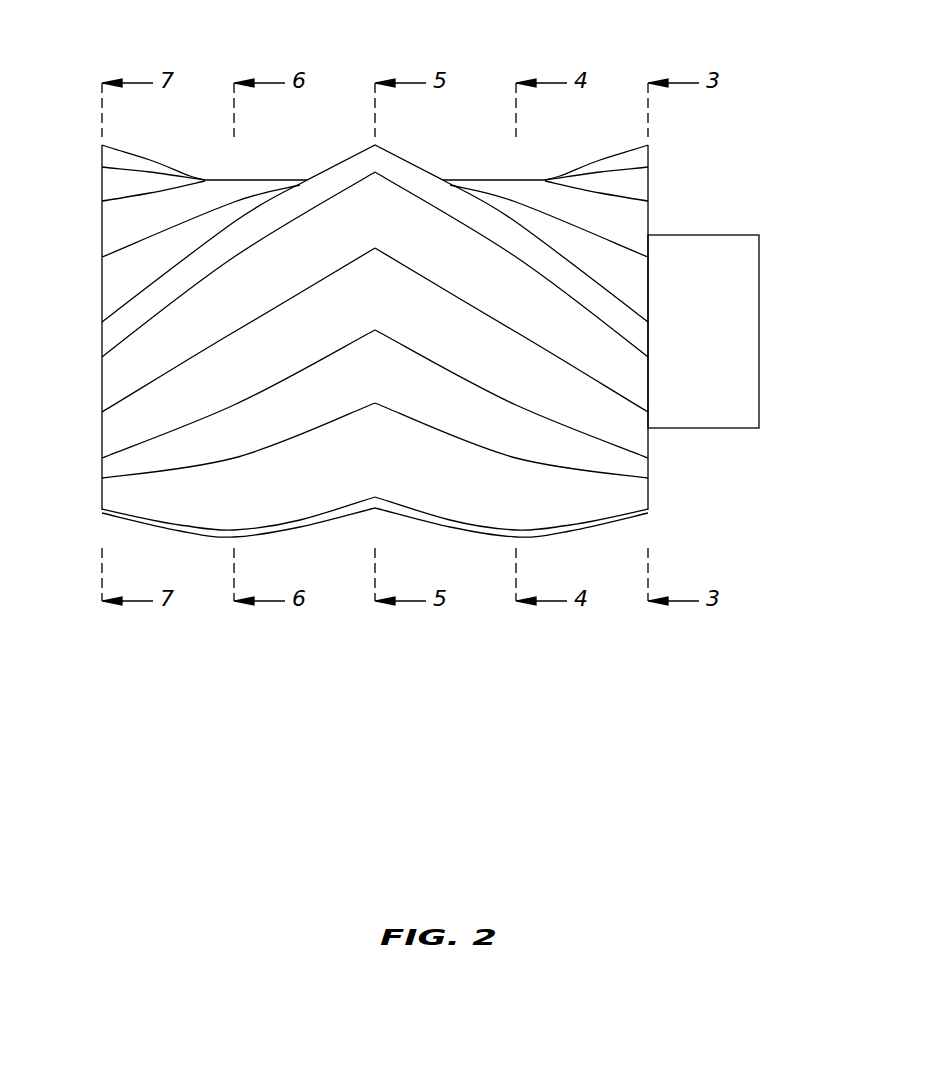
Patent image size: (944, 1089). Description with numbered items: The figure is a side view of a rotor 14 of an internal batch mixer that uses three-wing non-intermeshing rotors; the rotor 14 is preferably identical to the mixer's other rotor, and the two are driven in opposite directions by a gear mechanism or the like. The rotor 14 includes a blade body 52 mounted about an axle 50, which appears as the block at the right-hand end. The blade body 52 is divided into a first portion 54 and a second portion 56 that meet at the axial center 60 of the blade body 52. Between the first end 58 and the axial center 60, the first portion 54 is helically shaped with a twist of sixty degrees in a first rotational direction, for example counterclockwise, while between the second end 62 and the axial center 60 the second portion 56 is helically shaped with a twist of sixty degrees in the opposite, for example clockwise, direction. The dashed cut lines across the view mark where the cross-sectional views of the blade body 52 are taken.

The rotor 14 is at (429, 344).
The axle 50 is at (760, 292).
The blade body 52 is at (108, 384).
The first portion 54 is at (325, 562).
The second portion 56 is at (555, 548).
The first end 58 is at (102, 185).
The axial center 60 is at (375, 145).
The second end 62 is at (650, 190).